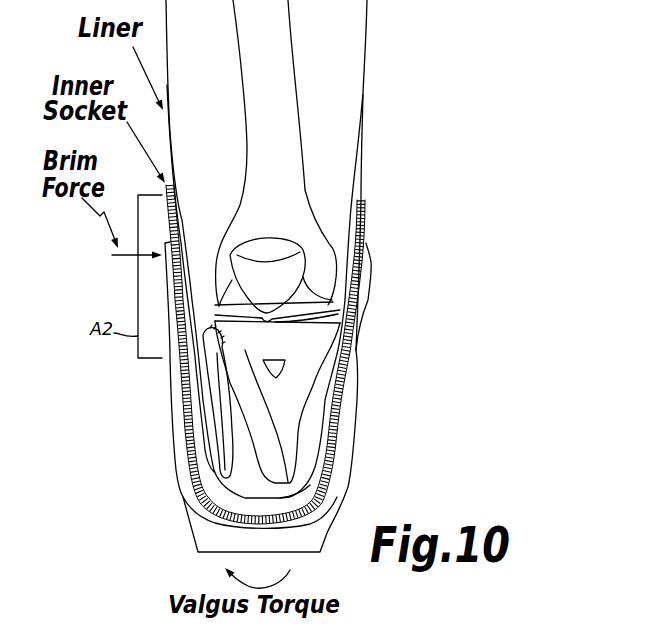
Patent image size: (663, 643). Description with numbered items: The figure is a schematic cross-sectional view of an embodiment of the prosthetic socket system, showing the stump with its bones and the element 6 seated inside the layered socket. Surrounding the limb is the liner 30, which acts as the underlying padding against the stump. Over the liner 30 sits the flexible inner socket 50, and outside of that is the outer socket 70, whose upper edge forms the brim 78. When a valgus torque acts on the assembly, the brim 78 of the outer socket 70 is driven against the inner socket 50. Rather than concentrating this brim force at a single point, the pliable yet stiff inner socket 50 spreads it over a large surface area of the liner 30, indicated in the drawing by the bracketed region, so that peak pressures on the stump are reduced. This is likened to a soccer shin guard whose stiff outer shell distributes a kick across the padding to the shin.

The residual limb bones 6 is at (307, 437).
The liner 30 is at (362, 141).
The inner socket 50 is at (365, 203).
The outer socket 70 is at (366, 292).
The brim 78 is at (370, 247).